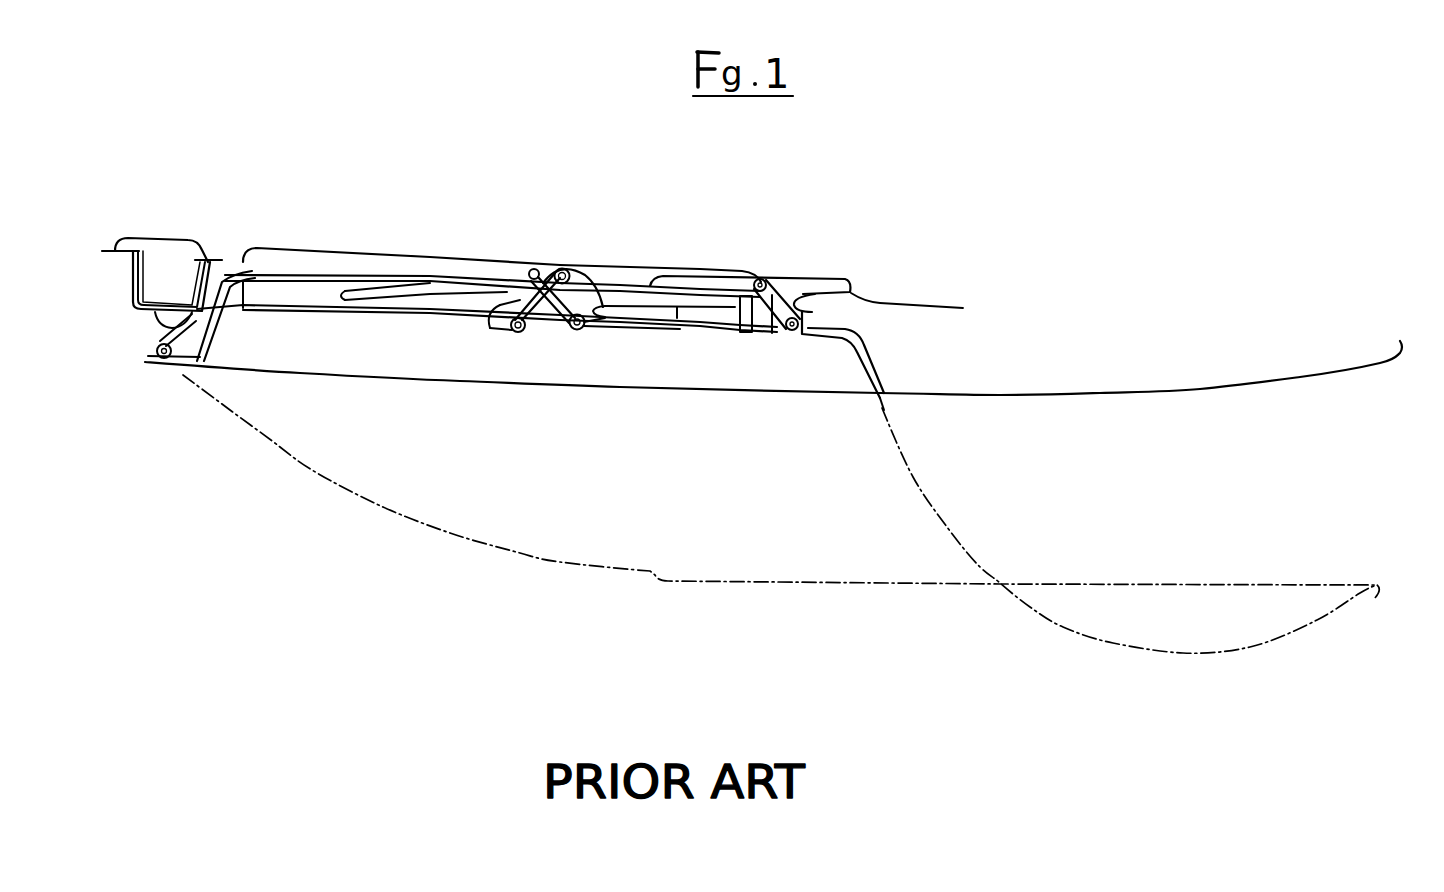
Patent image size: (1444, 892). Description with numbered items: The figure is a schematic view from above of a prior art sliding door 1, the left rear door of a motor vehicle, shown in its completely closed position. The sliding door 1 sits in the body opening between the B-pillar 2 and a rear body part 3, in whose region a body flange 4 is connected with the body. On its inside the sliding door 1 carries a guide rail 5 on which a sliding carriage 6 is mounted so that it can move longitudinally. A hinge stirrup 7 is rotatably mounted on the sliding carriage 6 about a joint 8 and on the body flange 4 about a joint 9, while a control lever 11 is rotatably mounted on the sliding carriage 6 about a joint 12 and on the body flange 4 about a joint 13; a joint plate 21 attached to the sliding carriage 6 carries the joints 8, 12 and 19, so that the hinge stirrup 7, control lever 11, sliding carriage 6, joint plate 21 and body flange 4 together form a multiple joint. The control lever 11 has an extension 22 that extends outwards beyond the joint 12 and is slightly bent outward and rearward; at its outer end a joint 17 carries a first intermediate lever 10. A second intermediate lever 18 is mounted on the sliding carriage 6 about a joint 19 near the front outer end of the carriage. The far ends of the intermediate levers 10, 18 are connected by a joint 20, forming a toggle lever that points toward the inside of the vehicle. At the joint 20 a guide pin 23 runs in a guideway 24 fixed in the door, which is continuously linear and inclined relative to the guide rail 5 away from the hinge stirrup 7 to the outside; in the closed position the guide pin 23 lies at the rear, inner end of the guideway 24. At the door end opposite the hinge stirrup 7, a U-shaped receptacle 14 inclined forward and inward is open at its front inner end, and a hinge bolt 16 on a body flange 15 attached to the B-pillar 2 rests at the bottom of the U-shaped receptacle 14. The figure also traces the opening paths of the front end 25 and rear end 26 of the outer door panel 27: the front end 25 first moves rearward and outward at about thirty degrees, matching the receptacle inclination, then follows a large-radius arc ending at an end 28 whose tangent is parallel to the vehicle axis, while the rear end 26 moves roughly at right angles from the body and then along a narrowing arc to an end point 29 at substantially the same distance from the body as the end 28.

The sliding door 1 is at (270, 160).
The B-pillar 2 is at (163, 247).
The rear body part 3 is at (812, 312).
The body flange 4 is at (794, 281).
The guide rail 5 is at (272, 305).
The sliding carriage 6 is at (672, 323).
The hinge stirrup 7 is at (624, 272).
The joint 8 is at (563, 268).
The joint 9 is at (754, 279).
The first intermediate lever 10 is at (556, 330).
The control lever 11 is at (753, 337).
The joint 12 is at (600, 312).
The joint 13 is at (796, 333).
The U-shaped receptacle 14 is at (156, 336).
The body flange 15 is at (158, 320).
The hinge bolt 16 is at (170, 370).
The joint 17 is at (594, 331).
The second intermediate lever 18 is at (497, 317).
The joint 19 is at (515, 333).
The joint 20 is at (533, 269).
The joint plate 21 is at (545, 329).
The extension 22 is at (588, 278).
The guide pin 23 is at (534, 242).
The guideway 24 is at (455, 283).
The front end 25 is at (153, 365).
The rear end 26 is at (878, 398).
The outer door panel 27 is at (307, 377).
The end 28 is at (653, 574).
The end point 29 is at (1373, 598).